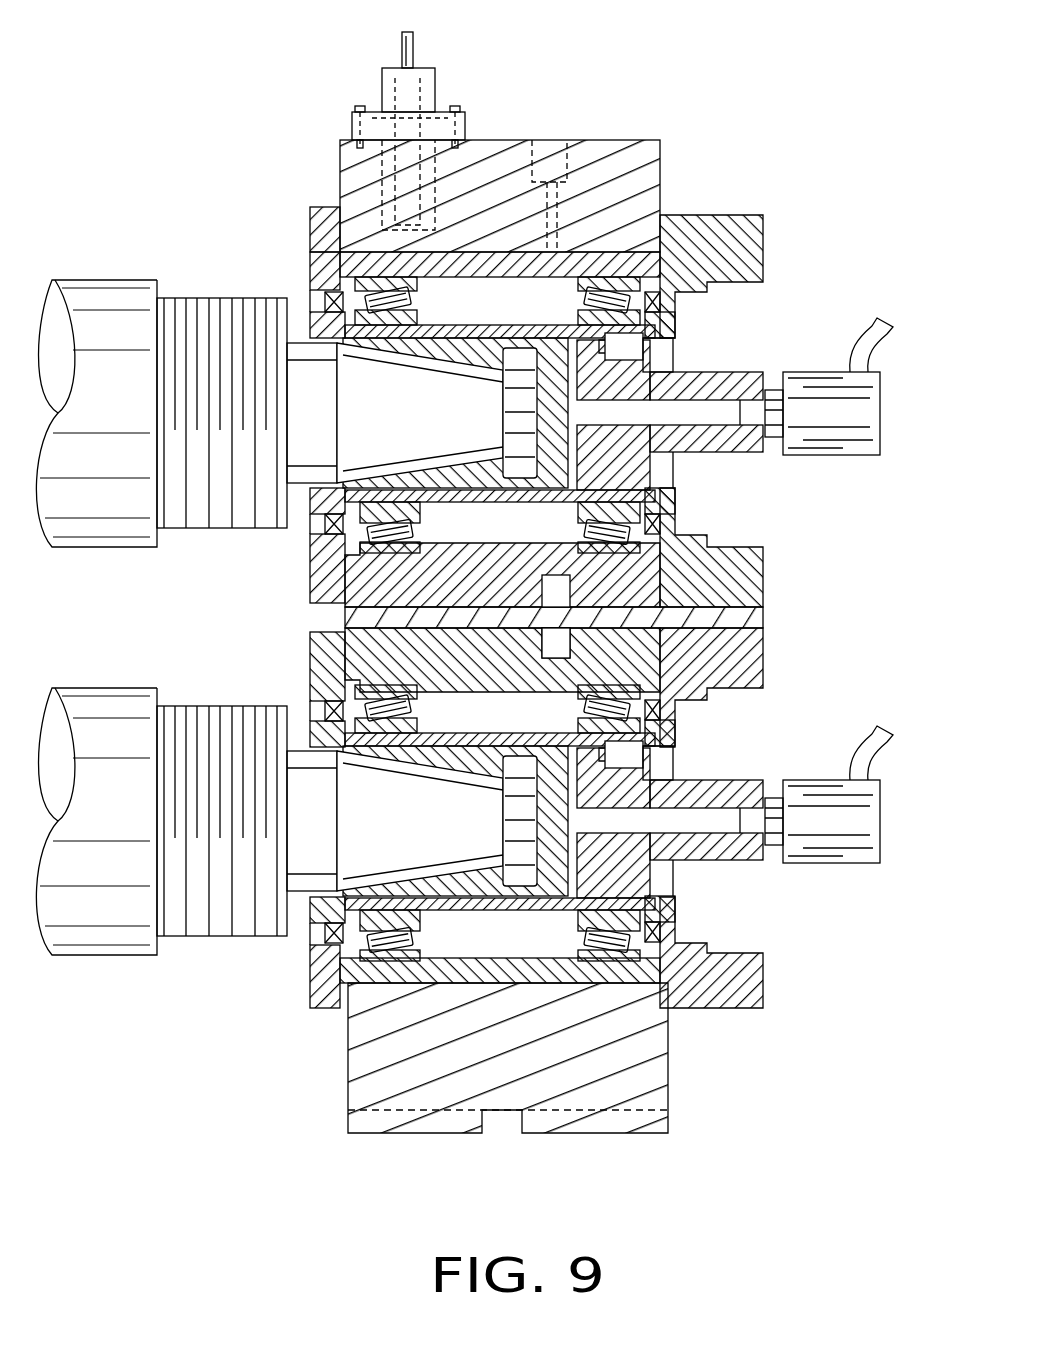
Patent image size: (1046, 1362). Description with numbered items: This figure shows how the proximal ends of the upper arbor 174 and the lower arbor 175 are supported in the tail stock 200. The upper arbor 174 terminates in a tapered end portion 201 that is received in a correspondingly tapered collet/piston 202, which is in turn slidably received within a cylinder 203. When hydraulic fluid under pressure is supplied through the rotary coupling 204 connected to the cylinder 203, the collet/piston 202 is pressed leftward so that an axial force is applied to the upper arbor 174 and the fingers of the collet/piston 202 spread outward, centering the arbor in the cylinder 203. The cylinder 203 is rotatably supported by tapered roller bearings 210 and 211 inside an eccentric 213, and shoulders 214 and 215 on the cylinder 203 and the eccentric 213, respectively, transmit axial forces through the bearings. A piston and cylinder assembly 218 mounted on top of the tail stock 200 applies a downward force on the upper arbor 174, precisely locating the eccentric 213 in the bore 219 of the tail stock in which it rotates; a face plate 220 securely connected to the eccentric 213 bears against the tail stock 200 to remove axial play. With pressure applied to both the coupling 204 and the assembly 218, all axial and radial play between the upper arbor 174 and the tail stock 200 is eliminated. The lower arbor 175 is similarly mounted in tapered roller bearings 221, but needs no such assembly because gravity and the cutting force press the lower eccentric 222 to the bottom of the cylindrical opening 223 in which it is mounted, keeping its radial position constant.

The upper arbor 174 is at (110, 270).
The lower arbor 175 is at (124, 682).
The tail stock 200 is at (522, 569).
The tapered end portion 201 is at (340, 323).
The collet/piston 202 is at (322, 298).
The cylinder 203 is at (324, 262).
The rotary coupling 204 is at (815, 372).
The tapered roller bearing 210 is at (393, 260).
The tapered roller bearing 211 is at (628, 255).
The eccentric 213 is at (577, 250).
The shoulder 214 is at (418, 527).
The shoulder 215 is at (377, 563).
The piston and cylinder assembly 218 is at (446, 80).
The bore 219 is at (472, 253).
The face plate 220 is at (310, 213).
The tapered roller bearings 221 is at (346, 1018).
The lower eccentric 222 is at (537, 965).
The cylindrical opening 223 is at (648, 972).